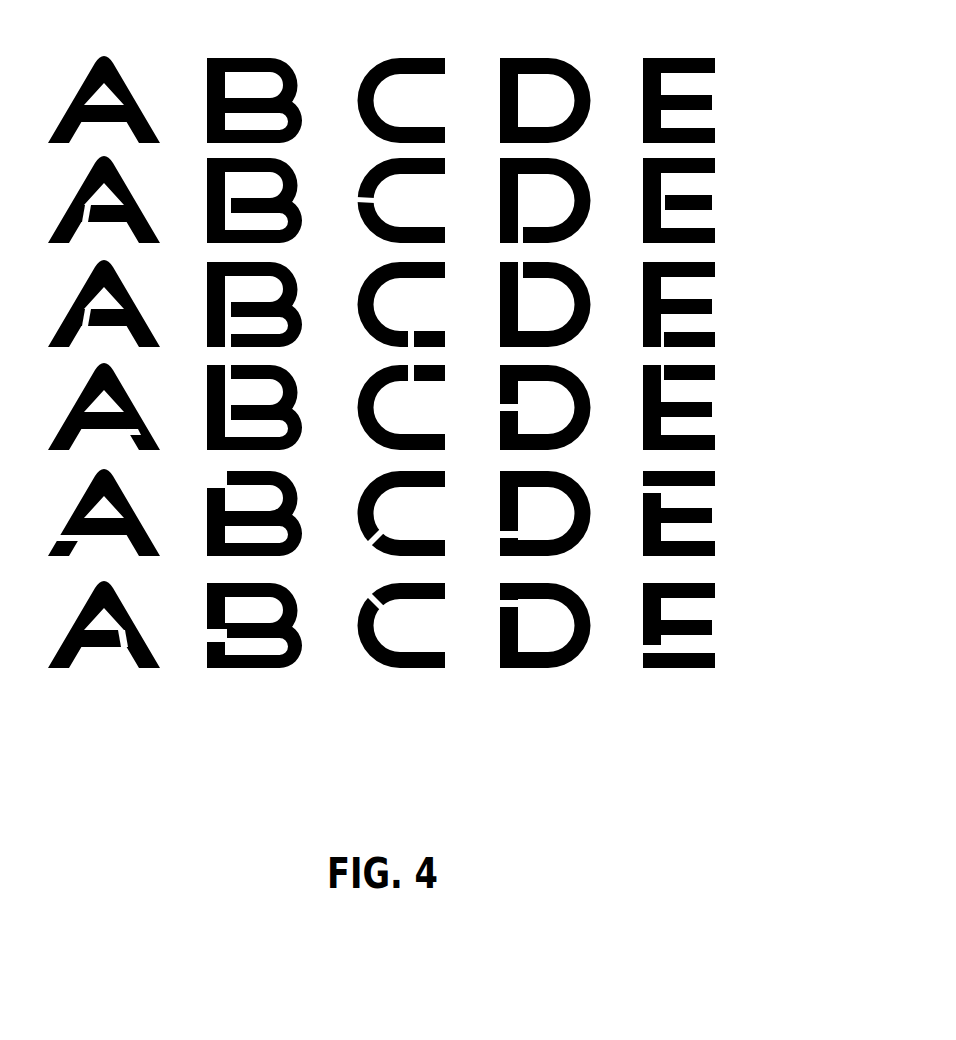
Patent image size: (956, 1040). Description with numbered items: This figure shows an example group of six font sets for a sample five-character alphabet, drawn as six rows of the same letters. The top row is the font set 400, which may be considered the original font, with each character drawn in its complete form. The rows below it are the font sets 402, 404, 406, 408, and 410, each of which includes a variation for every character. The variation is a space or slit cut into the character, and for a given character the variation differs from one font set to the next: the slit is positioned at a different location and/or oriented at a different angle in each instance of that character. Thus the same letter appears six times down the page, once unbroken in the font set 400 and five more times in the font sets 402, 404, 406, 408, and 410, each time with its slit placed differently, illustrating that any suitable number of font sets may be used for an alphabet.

The font set 400 is at (435, 79).
The font set 402 is at (435, 186).
The font set 404 is at (435, 294).
The font set 406 is at (435, 402).
The font set 408 is at (435, 511).
The font set 410 is at (435, 623).